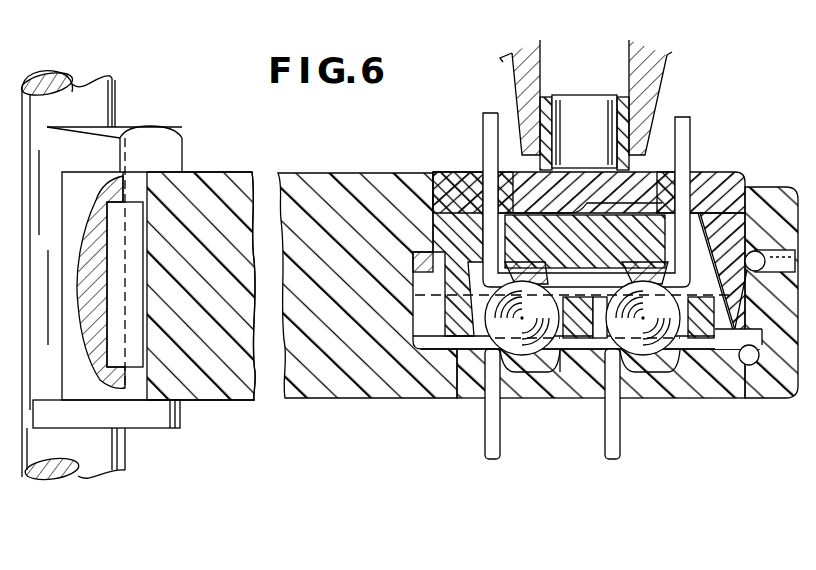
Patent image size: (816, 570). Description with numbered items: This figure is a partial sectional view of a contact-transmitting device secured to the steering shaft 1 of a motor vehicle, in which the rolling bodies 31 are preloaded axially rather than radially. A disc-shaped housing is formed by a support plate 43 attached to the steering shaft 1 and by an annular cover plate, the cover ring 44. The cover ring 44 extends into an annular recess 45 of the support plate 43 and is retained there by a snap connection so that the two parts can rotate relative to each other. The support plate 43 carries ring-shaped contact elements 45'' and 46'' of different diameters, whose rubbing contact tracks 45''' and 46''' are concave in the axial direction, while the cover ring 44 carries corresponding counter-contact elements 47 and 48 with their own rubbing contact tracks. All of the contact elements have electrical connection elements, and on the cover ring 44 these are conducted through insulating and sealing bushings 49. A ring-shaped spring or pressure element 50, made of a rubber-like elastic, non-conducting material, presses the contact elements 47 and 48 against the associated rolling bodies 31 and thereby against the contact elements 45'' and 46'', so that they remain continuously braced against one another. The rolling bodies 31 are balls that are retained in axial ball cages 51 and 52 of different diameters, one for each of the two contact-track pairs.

The steering shaft 1 is at (93, 107).
The rolling bodies 31 is at (542, 374).
The support plate 43 is at (328, 385).
The cover ring 44 is at (733, 188).
The annular recess 45 is at (755, 341).
The ring-shaped contact element 45'' is at (642, 404).
The rubbing contact track 45''' is at (643, 377).
The ring-shaped contact element 46'' is at (522, 377).
The rubbing contact track 46''' is at (580, 392).
The counter-contact element 47 is at (688, 147).
The counter-contact element 48 is at (490, 133).
The insulating and sealing bushing 49 is at (478, 195).
The spring or pressure element 50 is at (650, 197).
The axial ball cage 51 is at (703, 335).
The axial ball cage 52 is at (458, 398).